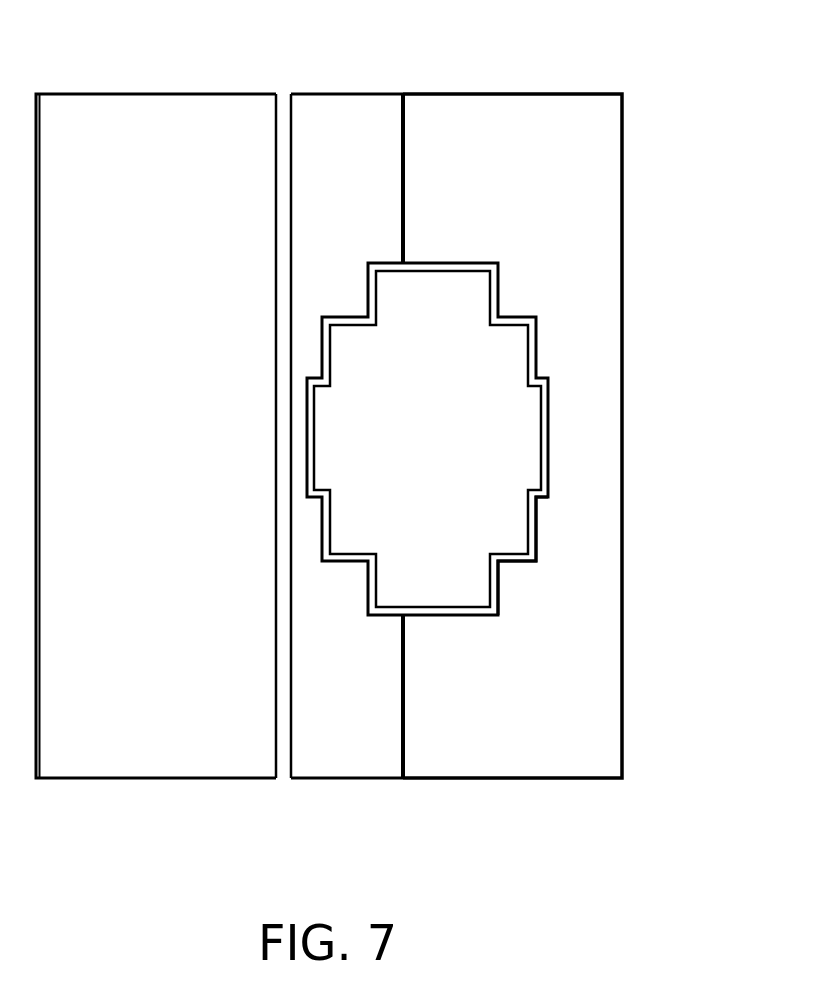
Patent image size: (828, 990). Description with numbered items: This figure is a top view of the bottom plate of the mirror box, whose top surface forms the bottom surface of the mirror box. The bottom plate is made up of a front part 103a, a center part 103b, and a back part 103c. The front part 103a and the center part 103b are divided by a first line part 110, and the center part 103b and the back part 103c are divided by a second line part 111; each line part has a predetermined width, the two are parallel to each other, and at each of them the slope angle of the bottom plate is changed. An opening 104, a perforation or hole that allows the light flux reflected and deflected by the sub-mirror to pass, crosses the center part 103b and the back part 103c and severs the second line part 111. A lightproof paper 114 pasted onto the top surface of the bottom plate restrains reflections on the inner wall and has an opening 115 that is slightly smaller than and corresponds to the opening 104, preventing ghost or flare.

The front part 103a is at (137, 133).
The center part 103b is at (332, 133).
The back part 103c is at (538, 133).
The opening 104 is at (500, 315).
The first line part 110 is at (292, 720).
The second line part 111 is at (403, 720).
The lightproof paper 114 is at (527, 380).
The opening 115 is at (527, 530).